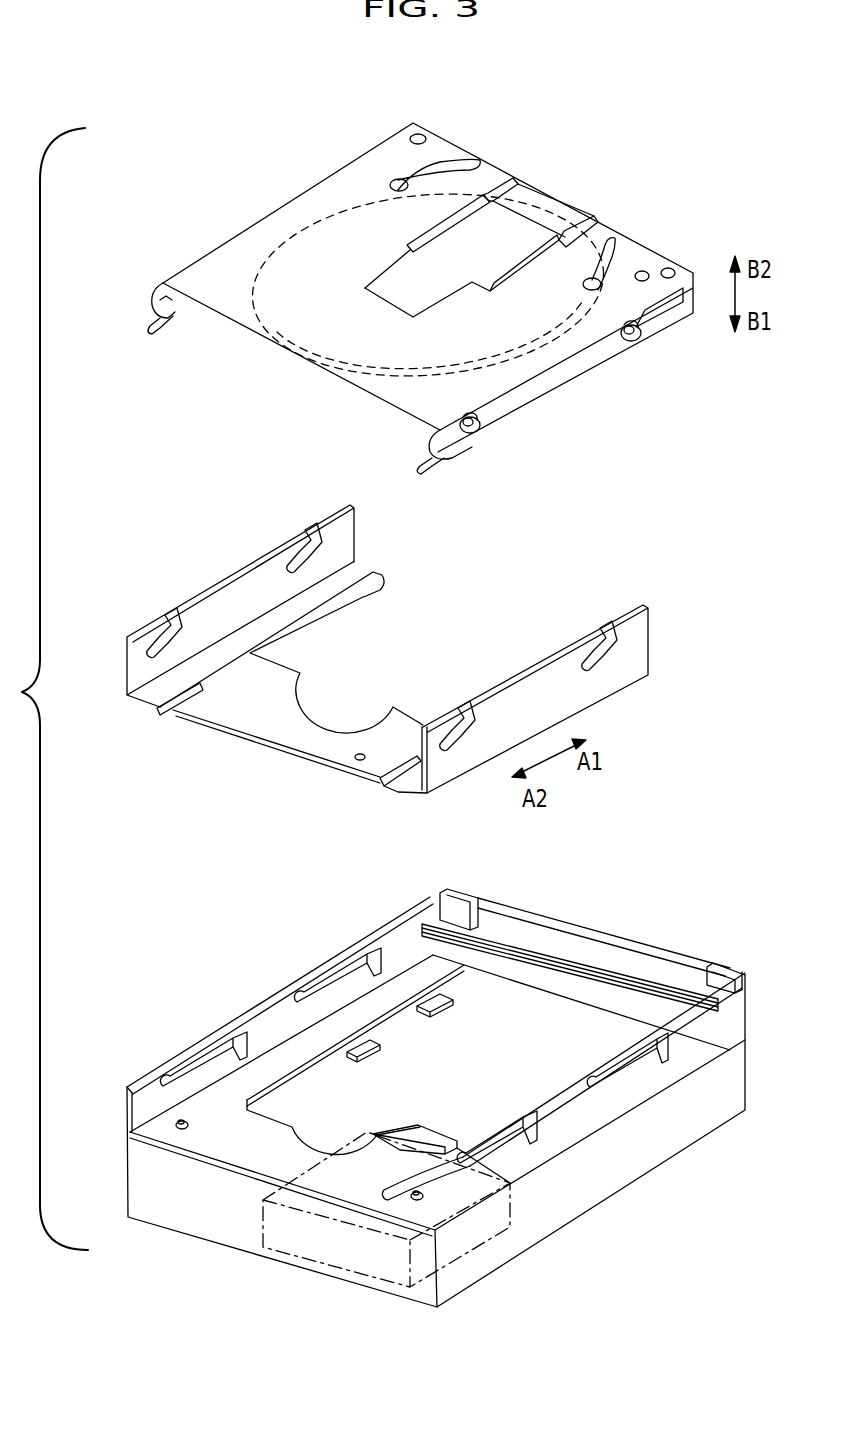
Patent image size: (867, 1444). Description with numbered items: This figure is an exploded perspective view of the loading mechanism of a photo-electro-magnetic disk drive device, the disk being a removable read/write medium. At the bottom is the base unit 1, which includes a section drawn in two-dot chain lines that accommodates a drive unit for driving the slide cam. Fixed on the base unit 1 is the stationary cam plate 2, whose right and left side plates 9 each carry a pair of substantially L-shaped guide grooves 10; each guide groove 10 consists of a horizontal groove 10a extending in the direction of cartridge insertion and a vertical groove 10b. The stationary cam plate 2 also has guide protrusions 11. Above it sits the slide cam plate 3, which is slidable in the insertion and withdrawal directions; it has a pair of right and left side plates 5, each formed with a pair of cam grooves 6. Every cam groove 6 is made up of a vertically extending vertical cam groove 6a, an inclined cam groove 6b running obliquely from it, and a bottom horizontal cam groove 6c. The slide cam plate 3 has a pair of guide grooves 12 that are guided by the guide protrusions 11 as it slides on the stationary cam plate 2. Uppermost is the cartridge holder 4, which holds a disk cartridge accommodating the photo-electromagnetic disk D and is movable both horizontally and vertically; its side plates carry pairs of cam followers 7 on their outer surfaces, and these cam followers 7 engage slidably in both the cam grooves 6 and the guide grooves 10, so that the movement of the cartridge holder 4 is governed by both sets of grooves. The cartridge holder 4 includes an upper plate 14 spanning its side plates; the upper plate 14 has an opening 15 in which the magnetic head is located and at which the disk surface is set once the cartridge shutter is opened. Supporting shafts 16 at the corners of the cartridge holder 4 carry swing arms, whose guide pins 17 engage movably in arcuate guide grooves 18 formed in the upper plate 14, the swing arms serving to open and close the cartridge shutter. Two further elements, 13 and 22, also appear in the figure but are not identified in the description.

The base unit 1 is at (630, 1167).
The stationary cam plate 2 is at (693, 1040).
The slide cam plate 3 is at (598, 722).
The cartridge holder 4 is at (570, 371).
The side plate 5 is at (250, 585).
The cam groove 6 is at (163, 622).
The vertical cam groove 6a is at (638, 618).
The inclined cam groove 6b is at (607, 650).
The bottom cam groove 6c is at (603, 667).
The cam follower 7 is at (639, 341).
The side plate 9 is at (137, 1083).
The guide groove 10 is at (347, 970).
The horizontal groove 10a is at (607, 1077).
The vertical groove 10b is at (675, 1058).
The guide protrusion 11 is at (188, 1126).
The guide groove 12 is at (167, 707).
The bracket bottom plate 13 is at (277, 728).
The upper plate 14 is at (330, 203).
The opening 15 is at (513, 230).
The supporting shaft 16 is at (418, 133).
The guide pin 17 is at (393, 193).
The arcuate guide groove 18 is at (477, 163).
The flexible cable 22 is at (540, 947).
The photo-electromagnetic disk D is at (278, 230).